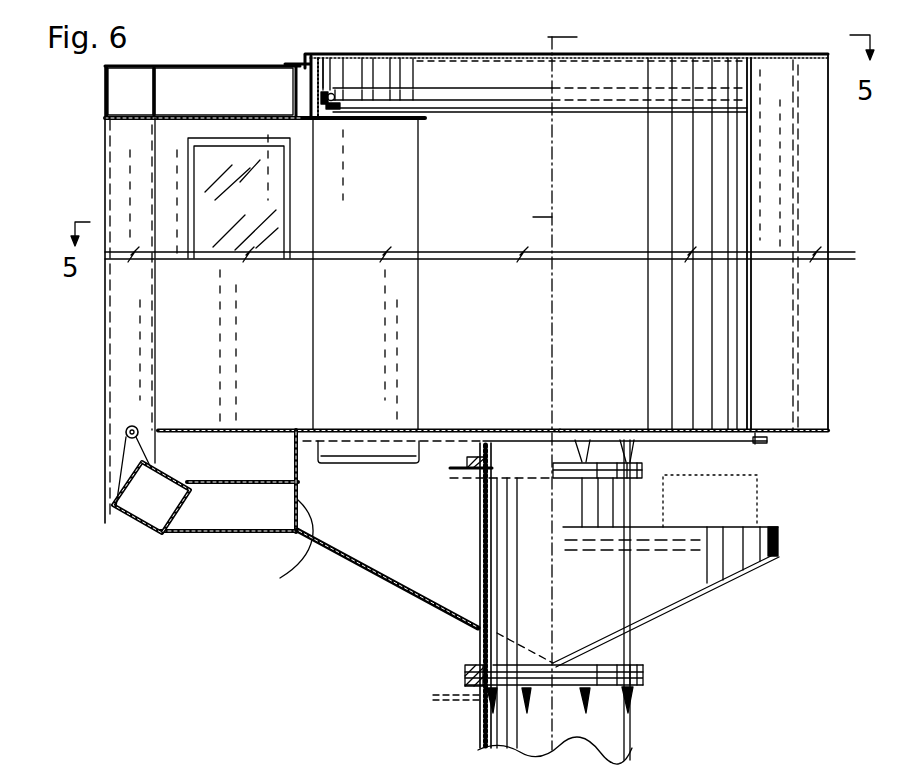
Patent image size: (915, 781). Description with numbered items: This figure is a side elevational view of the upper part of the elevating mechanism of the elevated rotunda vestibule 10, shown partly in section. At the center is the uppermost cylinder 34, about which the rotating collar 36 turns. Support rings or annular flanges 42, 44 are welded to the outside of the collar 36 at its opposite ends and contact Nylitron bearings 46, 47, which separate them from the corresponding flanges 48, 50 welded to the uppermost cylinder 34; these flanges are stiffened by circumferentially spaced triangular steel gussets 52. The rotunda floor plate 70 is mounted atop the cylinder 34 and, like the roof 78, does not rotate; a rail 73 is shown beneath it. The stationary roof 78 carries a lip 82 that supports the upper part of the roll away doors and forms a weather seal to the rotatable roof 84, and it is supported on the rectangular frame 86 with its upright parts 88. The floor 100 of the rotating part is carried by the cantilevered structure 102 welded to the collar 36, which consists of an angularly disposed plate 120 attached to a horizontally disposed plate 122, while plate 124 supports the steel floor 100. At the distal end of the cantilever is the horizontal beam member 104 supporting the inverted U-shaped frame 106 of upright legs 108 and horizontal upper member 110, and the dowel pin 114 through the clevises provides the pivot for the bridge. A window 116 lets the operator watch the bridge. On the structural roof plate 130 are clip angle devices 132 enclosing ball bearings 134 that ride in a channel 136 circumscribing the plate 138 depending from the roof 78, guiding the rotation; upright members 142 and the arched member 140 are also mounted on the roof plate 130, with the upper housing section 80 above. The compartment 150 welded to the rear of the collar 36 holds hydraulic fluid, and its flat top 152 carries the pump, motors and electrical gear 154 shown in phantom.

The elevated rotunda vestibule 10 is at (692, 43).
The uppermost cylinder 34 is at (487, 727).
The rotating collar 36 is at (478, 645).
The support ring or annular flange 42 is at (490, 475).
The support ring or annular flange 44 is at (465, 667).
The Nylitron bearing 46 is at (480, 467).
The Nylitron bearing 47 is at (465, 673).
The flange 48 is at (463, 463).
The flange 50 is at (465, 679).
The triangular steel gusset 52 is at (483, 697).
The rotunda floor plate 70 is at (780, 425).
The guide rail 73 is at (737, 443).
The roof 78 is at (618, 52).
The upper housing section 80 is at (203, 54).
The lip 82 is at (293, 60).
The rotatable roof 84 is at (263, 63).
The rectangular frame 86 is at (836, 183).
The upright part 88 is at (828, 232).
The floor 100 is at (192, 430).
The cantilevered structure 102 is at (349, 581).
The horizontal beam member 104 is at (150, 530).
The inverted U-shaped frame 106 is at (96, 326).
The upright leg 108 is at (120, 190).
The horizontal upper member 110 is at (105, 87).
The dowel pin 114 is at (112, 434).
The window 116 is at (207, 165).
The angularly disposed plate 120 is at (425, 600).
The horizontally disposed plate 122 is at (223, 537).
The plate 124 is at (305, 560).
The structural roof plate 130 is at (167, 120).
The clip angle device 132 is at (340, 112).
The ball bearing 134 is at (340, 57).
The channel 136 is at (325, 118).
The plate 138 is at (315, 58).
The arched member 140 is at (300, 118).
The upright member 142 is at (254, 92).
The compartment 150 is at (657, 600).
The flat top 152 is at (767, 527).
The hydraulic pump, motors and electrical gear 154 is at (757, 483).